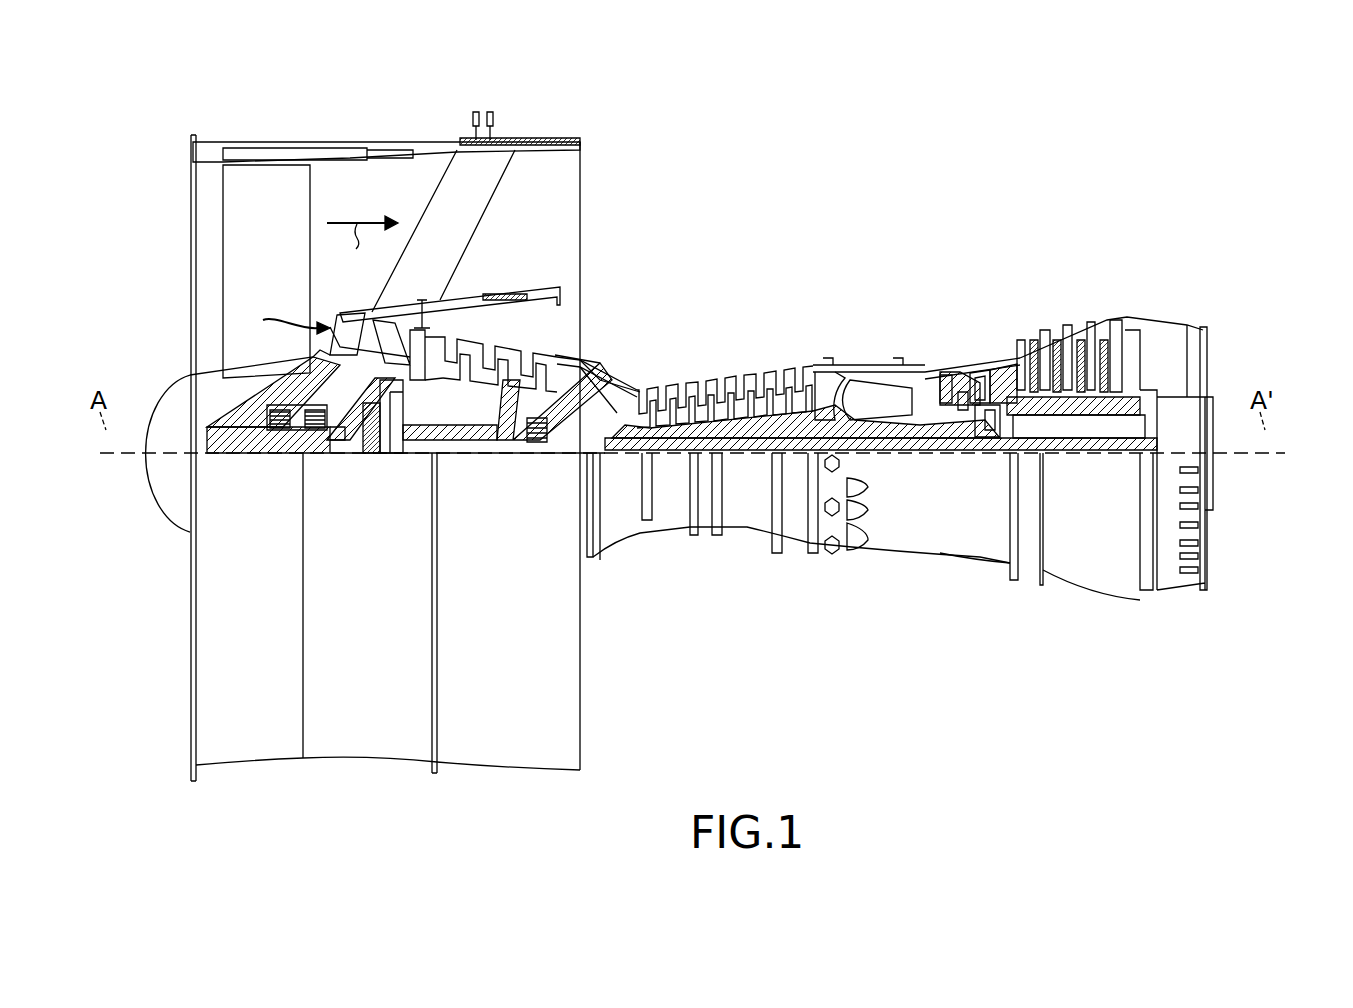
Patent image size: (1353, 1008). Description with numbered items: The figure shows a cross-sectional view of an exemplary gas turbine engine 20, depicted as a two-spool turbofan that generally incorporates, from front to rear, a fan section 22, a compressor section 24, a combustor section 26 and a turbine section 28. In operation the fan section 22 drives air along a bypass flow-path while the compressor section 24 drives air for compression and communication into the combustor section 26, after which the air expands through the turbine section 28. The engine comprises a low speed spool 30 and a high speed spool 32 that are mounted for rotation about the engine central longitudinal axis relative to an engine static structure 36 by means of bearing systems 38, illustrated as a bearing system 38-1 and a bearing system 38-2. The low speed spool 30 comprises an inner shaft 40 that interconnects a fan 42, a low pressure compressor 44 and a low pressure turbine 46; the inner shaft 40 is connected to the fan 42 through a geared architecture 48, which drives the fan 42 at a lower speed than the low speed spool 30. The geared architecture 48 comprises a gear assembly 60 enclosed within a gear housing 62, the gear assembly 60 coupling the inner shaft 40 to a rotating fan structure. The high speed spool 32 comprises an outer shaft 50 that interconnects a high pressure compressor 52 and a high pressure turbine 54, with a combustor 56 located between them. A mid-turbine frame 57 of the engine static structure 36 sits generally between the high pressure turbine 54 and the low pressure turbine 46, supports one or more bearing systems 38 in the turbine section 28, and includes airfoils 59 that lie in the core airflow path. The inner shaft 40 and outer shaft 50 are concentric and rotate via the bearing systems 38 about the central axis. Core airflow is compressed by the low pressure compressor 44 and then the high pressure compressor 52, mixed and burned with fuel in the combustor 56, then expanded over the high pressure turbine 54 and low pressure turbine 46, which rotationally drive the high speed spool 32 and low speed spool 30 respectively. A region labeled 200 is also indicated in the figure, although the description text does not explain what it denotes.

The gas turbine engine 20 is at (930, 176).
The fan section 22 is at (430, 119).
The compressor section 24 is at (443, 253).
The combustor section 26 is at (925, 253).
The turbine section 28 is at (1143, 253).
The low speed spool 30 is at (756, 492).
The high speed spool 32 is at (791, 421).
The engine static structure 36 is at (172, 764).
The bearing system 38 is at (983, 450).
The bearing system 38-1 is at (273, 430).
The bearing system 38-2 is at (539, 443).
The inner shaft 40 is at (603, 453).
The fan 42 is at (274, 270).
The low pressure compressor section 44 is at (513, 348).
The low pressure turbine section 46 is at (1077, 340).
The geared architecture 48 is at (400, 469).
The outer shaft 50 is at (862, 440).
The high pressure compressor 52 is at (748, 390).
The high pressure turbine section 54 is at (920, 372).
The combustor 56 is at (880, 398).
The mid-turbine frame 57 is at (992, 355).
The airfoils 59 is at (996, 380).
The gear assembly 60 is at (403, 430).
The gear housing 62 is at (398, 395).
The seal assembly 200 is at (690, 306).